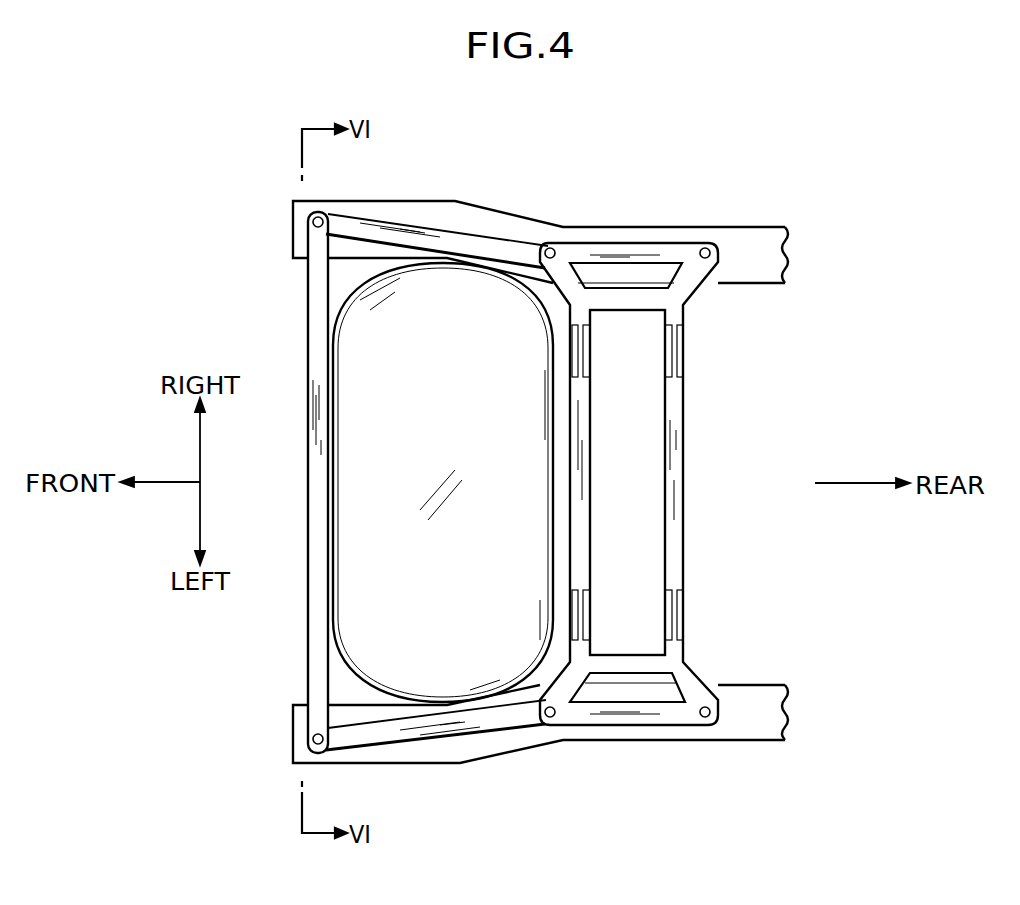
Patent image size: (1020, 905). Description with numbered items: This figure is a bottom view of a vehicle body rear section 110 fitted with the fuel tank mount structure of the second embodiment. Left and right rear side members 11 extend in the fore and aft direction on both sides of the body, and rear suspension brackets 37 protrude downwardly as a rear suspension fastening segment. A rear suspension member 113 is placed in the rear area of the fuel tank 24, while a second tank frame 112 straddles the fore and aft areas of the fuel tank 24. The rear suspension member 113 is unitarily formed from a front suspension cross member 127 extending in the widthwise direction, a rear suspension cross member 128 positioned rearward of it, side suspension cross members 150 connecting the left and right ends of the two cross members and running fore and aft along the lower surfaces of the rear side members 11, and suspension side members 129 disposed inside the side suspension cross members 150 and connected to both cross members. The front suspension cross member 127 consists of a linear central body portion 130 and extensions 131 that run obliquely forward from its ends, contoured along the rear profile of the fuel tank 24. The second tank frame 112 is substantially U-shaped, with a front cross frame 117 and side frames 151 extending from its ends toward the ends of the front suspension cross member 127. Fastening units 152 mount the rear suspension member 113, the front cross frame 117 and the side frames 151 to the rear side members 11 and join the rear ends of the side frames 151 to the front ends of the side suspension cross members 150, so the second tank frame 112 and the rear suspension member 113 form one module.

The rear side member 11 is at (748, 247).
The fuel tank 24 is at (424, 573).
The rear suspension bracket 37 is at (683, 345).
The vehicle body rear section 110 is at (208, 181).
The second tank frame 112 is at (300, 350).
The rear suspension member 113 is at (686, 487).
The front cross frame 117 is at (313, 653).
The front suspension cross member 127 is at (563, 413).
The rear suspension cross member 128 is at (673, 463).
The suspension side member 129 is at (620, 661).
The body portion 130 is at (555, 680).
The extension 131 is at (578, 264).
The side suspension cross member 150 is at (663, 710).
The side frame 151 is at (453, 236).
The fastening unit 152 is at (310, 222).